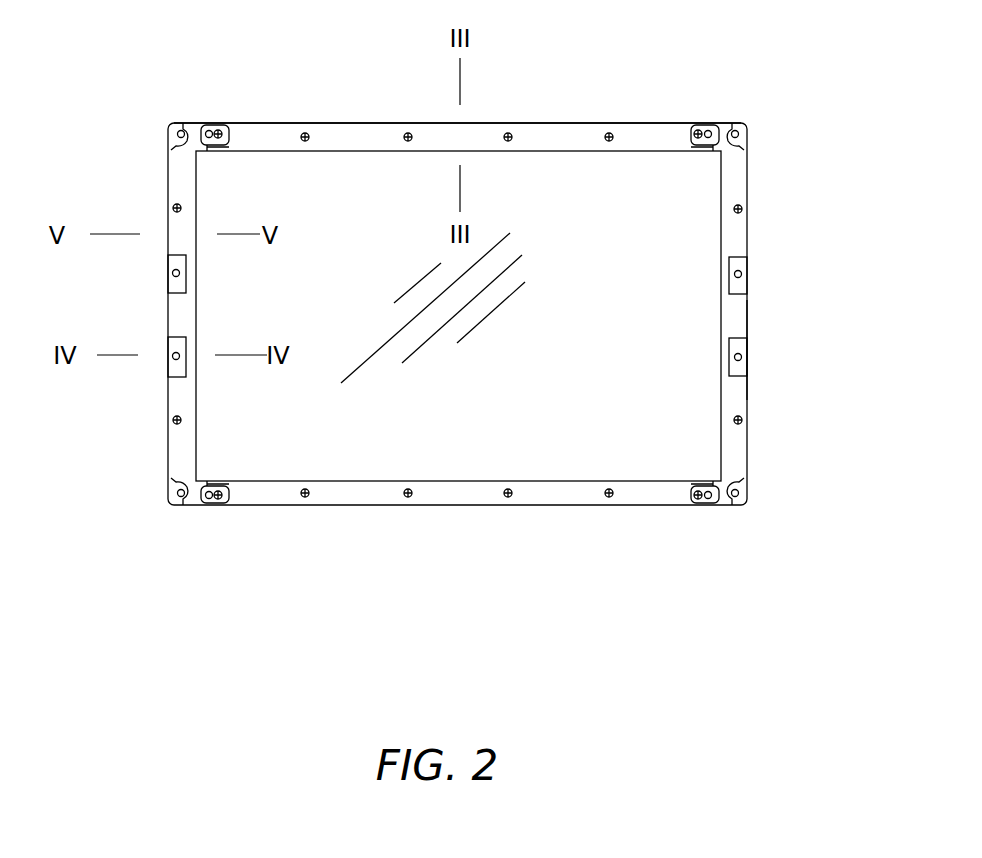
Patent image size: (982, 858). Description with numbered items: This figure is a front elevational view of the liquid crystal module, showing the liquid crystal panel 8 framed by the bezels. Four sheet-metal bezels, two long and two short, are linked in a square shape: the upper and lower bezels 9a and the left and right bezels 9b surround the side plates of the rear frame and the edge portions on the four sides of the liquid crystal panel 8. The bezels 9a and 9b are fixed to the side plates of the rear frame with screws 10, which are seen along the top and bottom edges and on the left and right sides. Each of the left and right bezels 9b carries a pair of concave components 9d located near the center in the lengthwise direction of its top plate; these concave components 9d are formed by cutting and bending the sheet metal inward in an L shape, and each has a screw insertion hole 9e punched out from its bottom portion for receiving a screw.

The liquid crystal panel 8 is at (555, 172).
The bezel 9a is at (358, 123).
The bezel 9b is at (748, 402).
The concave component 9d is at (172, 265).
The screw insertion hole 9e is at (174, 276).
The screw 10 is at (173, 204).